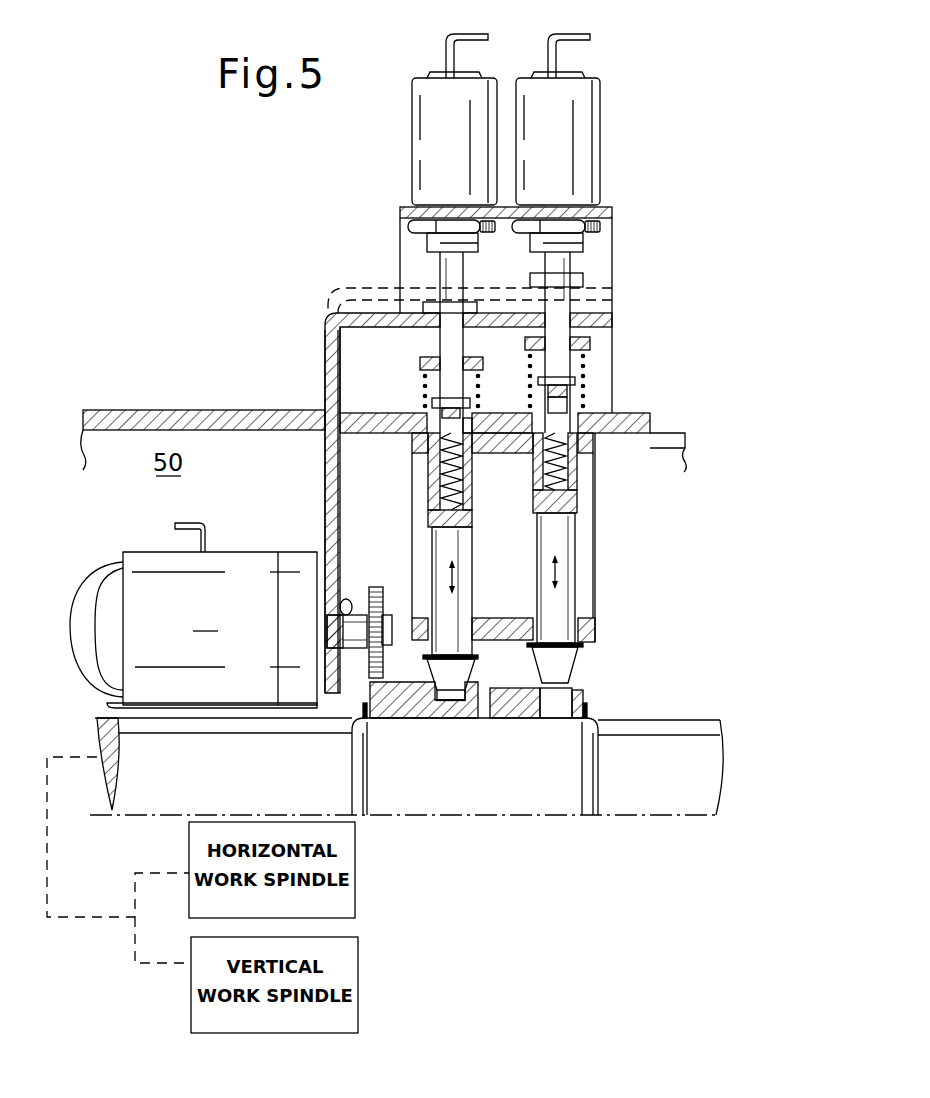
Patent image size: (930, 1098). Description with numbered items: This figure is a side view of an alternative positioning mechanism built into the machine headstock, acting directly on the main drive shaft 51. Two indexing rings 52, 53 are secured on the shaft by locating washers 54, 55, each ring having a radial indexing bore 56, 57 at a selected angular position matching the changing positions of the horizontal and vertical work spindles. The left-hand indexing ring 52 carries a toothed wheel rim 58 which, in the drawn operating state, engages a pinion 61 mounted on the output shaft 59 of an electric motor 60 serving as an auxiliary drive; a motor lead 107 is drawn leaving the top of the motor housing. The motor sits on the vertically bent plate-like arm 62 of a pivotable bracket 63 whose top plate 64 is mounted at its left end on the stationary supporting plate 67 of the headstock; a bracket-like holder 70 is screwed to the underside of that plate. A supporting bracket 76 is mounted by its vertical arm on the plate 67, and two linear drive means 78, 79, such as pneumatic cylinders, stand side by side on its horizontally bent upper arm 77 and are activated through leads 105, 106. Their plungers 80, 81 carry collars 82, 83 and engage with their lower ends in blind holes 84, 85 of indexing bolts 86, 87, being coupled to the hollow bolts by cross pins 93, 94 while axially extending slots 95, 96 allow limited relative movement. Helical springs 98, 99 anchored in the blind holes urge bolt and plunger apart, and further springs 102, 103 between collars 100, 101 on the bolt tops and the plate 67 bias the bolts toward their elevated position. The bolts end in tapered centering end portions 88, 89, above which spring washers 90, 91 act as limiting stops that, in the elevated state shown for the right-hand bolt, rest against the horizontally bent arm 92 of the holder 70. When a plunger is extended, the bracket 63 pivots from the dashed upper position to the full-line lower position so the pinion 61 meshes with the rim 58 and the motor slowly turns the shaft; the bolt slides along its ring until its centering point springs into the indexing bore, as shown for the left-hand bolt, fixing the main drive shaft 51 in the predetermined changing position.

The main drive shaft 51 is at (463, 803).
The indexing ring 52 is at (400, 712).
The indexing ring 53 is at (521, 711).
The locating washer 54 is at (362, 720).
The locating washer 55 is at (586, 708).
The radial indexing bore 56 is at (451, 712).
The radial indexing bore 57 is at (551, 711).
The toothed wheel rim 58 is at (357, 673).
The output shaft 59 is at (347, 601).
The electric motor 60 is at (193, 630).
The pinion 61 is at (381, 587).
The plate-like arm 62 is at (327, 523).
The pivotable bracket 63 is at (322, 338).
The top plate 64 is at (364, 288).
The supporting plate 67 is at (223, 410).
The bracket-like holder 70 is at (588, 536).
The supporting bracket 76 is at (603, 392).
The upper arm 77 is at (612, 212).
The linear drive means 78 is at (424, 127).
The linear drive means 79 is at (585, 130).
The plunger 80 is at (441, 258).
The plunger 81 is at (571, 262).
The collar 82 is at (432, 300).
The collar 83 is at (584, 279).
The blind hole 84 is at (437, 499).
The blind hole 85 is at (578, 497).
The indexing bolt 86 is at (461, 569).
The indexing bolt 87 is at (570, 577).
The tapered centering end portion 88 is at (446, 678).
The tapered centering end portion 89 is at (568, 667).
The spring washer 90 is at (478, 657).
The spring washer 91 is at (583, 648).
The horizontally bent arm 92 is at (591, 627).
The cross pin 93 is at (432, 403).
The cross pin 94 is at (575, 382).
The axially extending slot 95 is at (468, 420).
The axially extending slot 96 is at (573, 402).
The helical spring 98 is at (440, 470).
The helical spring 99 is at (578, 466).
The collar 100 is at (420, 363).
The collar 101 is at (590, 341).
The spring 102 is at (478, 377).
The spring 103 is at (587, 364).
The lead 105 is at (447, 36).
The lead 106 is at (552, 34).
The motor connector 107 is at (207, 525).